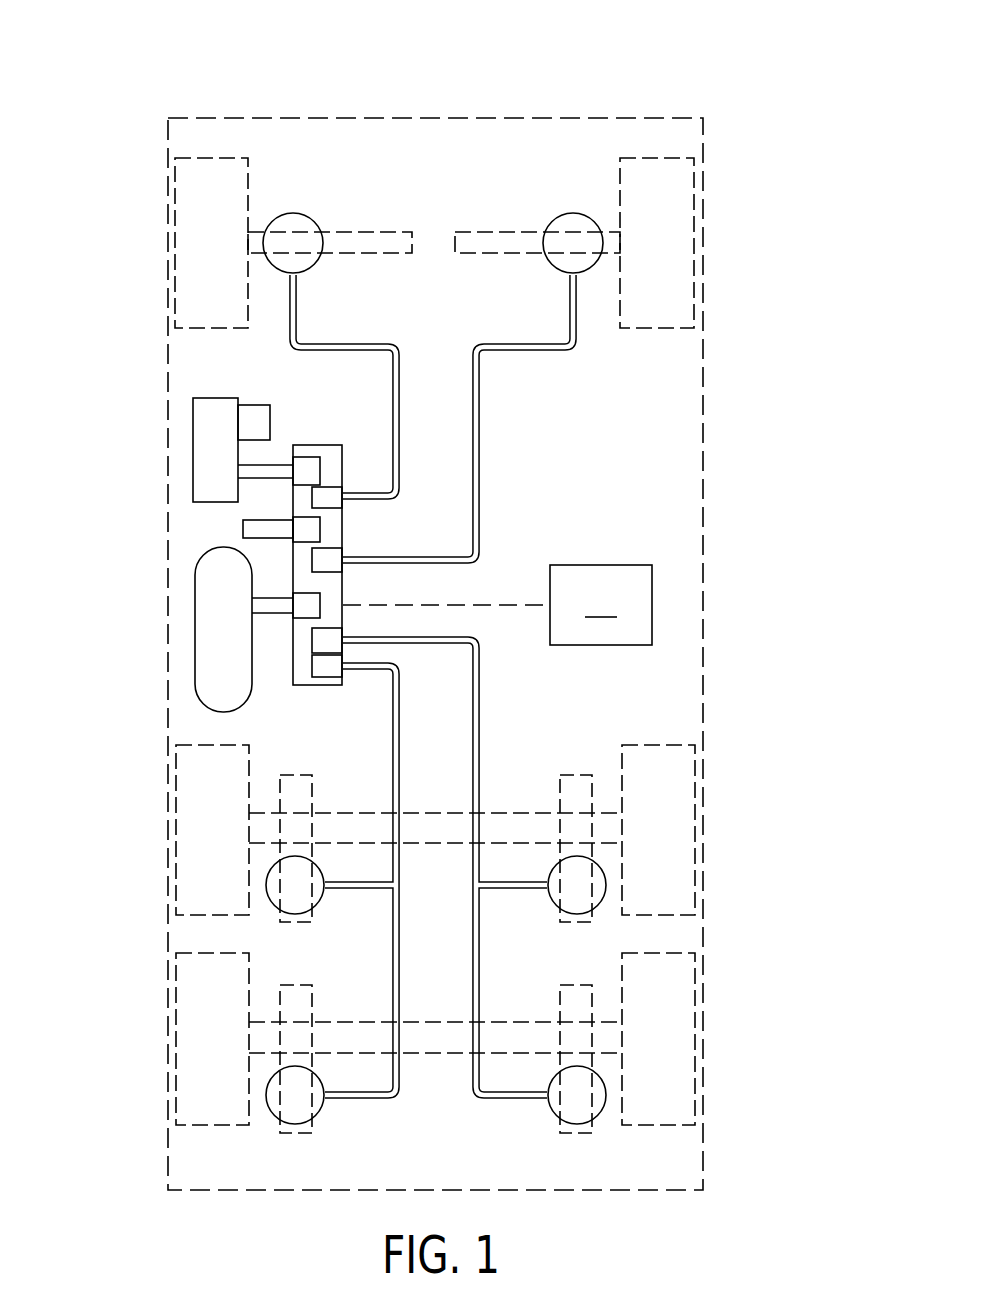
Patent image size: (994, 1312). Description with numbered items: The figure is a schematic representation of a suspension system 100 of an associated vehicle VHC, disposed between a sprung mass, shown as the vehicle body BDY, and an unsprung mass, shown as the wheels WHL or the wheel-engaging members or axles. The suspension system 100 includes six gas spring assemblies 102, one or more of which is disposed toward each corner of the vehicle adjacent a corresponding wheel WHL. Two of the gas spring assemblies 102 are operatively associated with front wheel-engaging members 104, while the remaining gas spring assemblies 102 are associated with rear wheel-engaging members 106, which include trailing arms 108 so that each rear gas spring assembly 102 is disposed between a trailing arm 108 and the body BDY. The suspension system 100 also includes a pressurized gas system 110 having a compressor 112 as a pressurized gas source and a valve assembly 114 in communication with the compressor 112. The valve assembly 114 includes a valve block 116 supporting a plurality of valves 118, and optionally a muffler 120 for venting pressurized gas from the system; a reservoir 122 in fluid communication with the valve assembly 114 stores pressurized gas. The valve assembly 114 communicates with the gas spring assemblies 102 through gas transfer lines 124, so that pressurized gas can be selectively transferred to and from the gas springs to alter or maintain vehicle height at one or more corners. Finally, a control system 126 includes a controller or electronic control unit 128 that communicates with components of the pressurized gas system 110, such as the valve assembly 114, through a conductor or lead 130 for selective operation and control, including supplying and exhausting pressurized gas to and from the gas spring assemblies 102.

The suspension system 100 is at (736, 392).
The gas spring assemblies 102 is at (296, 212).
The front wheel-engaging members 104 is at (366, 232).
The rear wheel-engaging members 106 is at (505, 813).
The trailing arms 108 is at (311, 925).
The pressurized gas system 110 is at (204, 538).
The compressor 112 is at (204, 437).
The valve assembly 114 is at (309, 444).
The valve block 116 is at (333, 458).
The valves 118 is at (328, 553).
The muffler 120 is at (243, 524).
The reservoir 122 is at (204, 608).
The gas transfer lines 124 is at (355, 344).
The control system 126 is at (579, 526).
The controller or electronic control unit (ECU) 128 is at (601, 605).
The conductor or lead 130 is at (503, 604).
The vehicle VHC is at (704, 68).
The vehicle body BDY is at (551, 116).
The wheel WHL is at (176, 193).